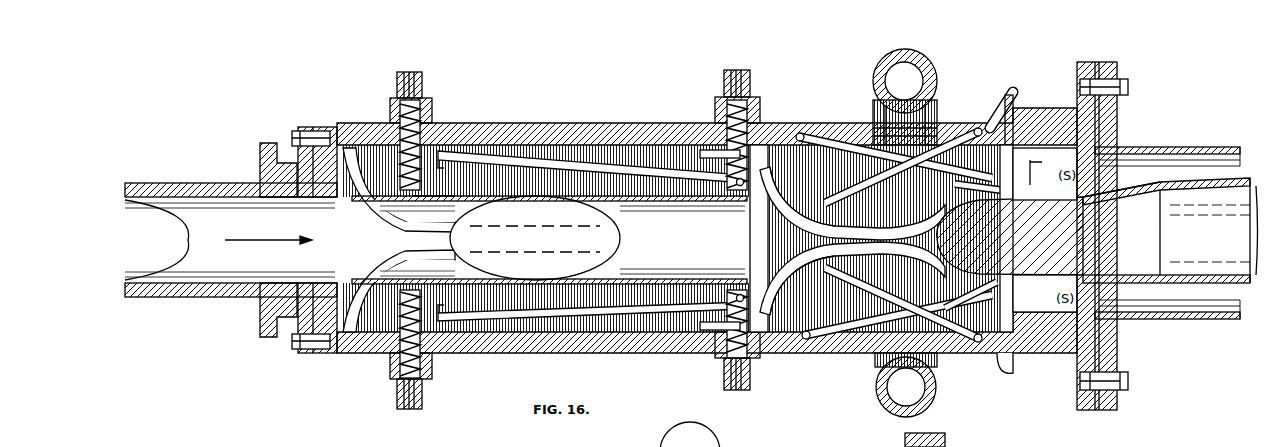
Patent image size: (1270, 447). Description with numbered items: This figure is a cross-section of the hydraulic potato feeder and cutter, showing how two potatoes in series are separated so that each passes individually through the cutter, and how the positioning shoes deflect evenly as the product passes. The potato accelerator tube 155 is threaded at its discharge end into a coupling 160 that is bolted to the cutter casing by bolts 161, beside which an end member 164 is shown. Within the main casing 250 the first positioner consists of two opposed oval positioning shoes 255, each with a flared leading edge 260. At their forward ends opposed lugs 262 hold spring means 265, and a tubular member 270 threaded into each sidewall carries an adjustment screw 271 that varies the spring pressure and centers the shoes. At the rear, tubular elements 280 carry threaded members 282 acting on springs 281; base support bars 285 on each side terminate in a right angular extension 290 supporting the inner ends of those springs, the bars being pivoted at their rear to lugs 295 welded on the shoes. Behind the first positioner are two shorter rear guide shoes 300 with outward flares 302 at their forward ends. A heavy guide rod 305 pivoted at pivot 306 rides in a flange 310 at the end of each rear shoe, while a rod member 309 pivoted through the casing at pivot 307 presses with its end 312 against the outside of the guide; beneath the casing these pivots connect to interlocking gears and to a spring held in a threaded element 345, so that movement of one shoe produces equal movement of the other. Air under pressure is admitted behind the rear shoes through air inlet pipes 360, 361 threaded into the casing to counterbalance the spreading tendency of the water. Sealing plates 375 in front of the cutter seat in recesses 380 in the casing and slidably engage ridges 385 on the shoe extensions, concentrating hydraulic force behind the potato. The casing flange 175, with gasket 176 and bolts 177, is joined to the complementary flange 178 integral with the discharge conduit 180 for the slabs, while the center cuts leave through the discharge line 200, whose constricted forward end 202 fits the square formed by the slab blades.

The potato accelerator tube 155 is at (197, 172).
The coupling 160 is at (264, 143).
The bolts 161 is at (297, 130).
The casing end flange 164 is at (316, 128).
The main casing 250 is at (583, 123).
The positioning shoes 255 is at (655, 205).
The flared leading edge 260 is at (354, 186).
The lugs 262 is at (418, 197).
The spring means 265 is at (398, 156).
The tubular member 270 is at (420, 112).
The adjustment screw 271 is at (422, 84).
The tubular elements 280 is at (715, 110).
The springs 281 is at (700, 154).
The threaded member 282 is at (750, 80).
The base support bars 285 is at (556, 168).
The right angular extension 290 is at (745, 180).
The lugs 295 is at (730, 205).
The rear guide shoes 300 is at (887, 210).
The flares 302 is at (768, 168).
The guide rod 305 is at (862, 160).
The pivot 306 is at (801, 133).
The pivot 307 is at (978, 128).
The rod member 309 is at (866, 201).
The flange 310 is at (955, 185).
The rod end 312 is at (828, 198).
The air inlet pipe 360 is at (933, 66).
The air inlet pipe 361 is at (937, 392).
The sealing plates 375 is at (1012, 118).
The recesses 380 is at (994, 118).
The ridges 385 is at (1006, 185).
The gasket 176 is at (1103, 410).
The bolts 177 is at (1128, 88).
The complementary flange 178 is at (1118, 128).
The discharge conduit 180 is at (1200, 147).
The discharge line 200 is at (1198, 178).
The constricted forward end 202 is at (1120, 188).
The flange 175 is at (870, 438).
The threaded element 345 is at (757, 443).